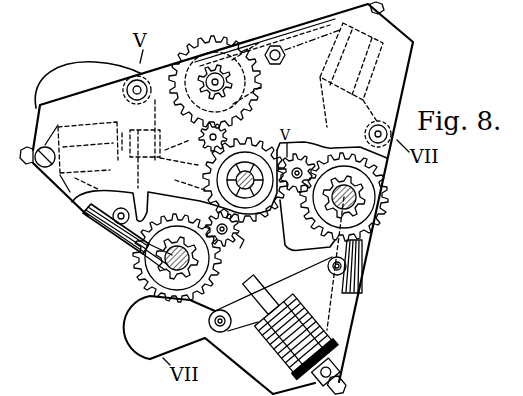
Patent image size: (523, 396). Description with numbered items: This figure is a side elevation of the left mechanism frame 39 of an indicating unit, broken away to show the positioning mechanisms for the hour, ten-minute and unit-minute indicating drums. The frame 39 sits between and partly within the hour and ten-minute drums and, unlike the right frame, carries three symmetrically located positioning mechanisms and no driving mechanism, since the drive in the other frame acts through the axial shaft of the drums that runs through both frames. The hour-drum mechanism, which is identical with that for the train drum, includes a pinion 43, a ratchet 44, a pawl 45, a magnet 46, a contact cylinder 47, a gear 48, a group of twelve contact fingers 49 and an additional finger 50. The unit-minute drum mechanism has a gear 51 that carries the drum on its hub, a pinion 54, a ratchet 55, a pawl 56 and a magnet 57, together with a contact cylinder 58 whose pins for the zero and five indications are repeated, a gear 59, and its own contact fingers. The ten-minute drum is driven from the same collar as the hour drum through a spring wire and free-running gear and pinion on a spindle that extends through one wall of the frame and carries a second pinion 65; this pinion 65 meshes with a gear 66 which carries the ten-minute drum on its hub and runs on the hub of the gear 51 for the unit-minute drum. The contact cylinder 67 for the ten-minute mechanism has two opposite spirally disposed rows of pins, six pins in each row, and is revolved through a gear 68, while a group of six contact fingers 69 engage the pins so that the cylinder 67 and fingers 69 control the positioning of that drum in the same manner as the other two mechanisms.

The frame 39 is at (353, 322).
The pinion 43 is at (228, 248).
The ratchet 44 is at (240, 244).
The pawl 45 is at (182, 165).
The magnet 46 is at (100, 183).
The contact cylinder 47 is at (208, 276).
The gear 48 is at (139, 285).
The group of twelve contact fingers 49 is at (118, 257).
The additional finger 50 is at (187, 275).
The gear 51 is at (241, 234).
The pinion 54 is at (301, 163).
The ratchet 55 is at (318, 213).
The pawl 56 is at (285, 233).
The magnet 57 is at (284, 352).
The contact cylinder 58 is at (386, 193).
The gear 59 is at (385, 205).
The second pinion 65 is at (199, 137).
The gear 66 is at (243, 140).
The contact cylinder 67 is at (209, 84).
The gear 68 is at (214, 78).
The group of six contact fingers 69 is at (260, 37).